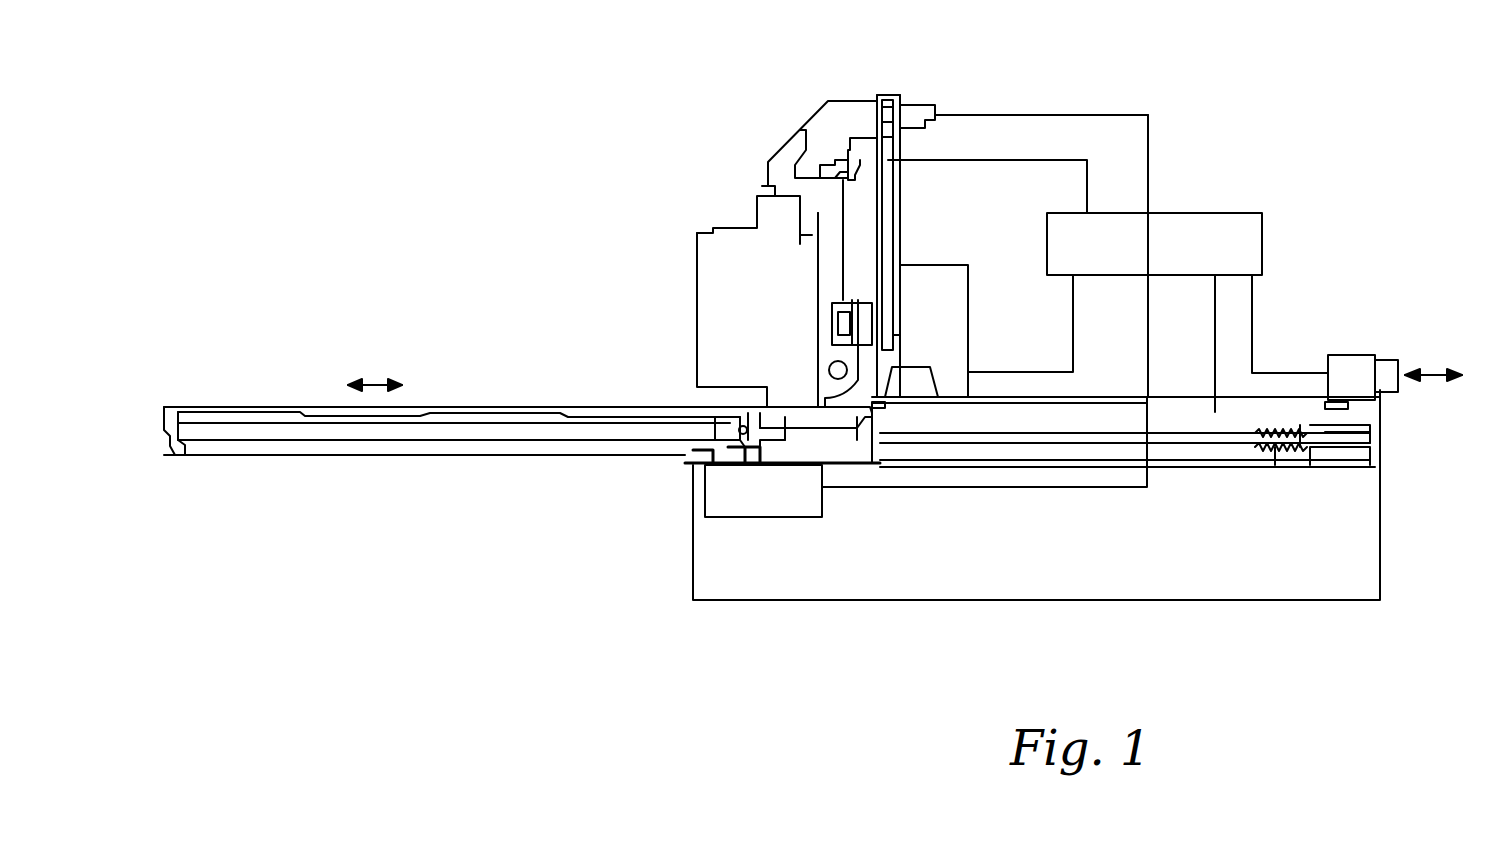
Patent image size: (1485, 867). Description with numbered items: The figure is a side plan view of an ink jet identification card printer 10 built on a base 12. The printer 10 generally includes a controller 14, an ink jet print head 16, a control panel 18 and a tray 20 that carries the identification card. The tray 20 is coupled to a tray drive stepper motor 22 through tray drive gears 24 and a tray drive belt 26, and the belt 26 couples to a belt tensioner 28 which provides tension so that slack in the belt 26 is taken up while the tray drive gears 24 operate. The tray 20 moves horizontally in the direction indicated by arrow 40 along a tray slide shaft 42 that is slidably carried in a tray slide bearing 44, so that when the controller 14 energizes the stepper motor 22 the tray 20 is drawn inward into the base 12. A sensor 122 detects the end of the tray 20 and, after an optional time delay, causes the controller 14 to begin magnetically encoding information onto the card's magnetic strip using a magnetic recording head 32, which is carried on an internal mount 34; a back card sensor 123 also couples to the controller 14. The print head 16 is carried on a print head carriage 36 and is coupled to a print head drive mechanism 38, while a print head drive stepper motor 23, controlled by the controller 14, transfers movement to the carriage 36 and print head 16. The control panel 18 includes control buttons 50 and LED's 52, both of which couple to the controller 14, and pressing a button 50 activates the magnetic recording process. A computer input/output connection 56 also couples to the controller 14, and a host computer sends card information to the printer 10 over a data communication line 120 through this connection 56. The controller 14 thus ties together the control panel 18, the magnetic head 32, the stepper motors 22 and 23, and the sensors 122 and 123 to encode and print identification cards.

The ink jet identification card printer 10 is at (1180, 50).
The base 12 is at (1380, 543).
The controller 14 is at (1235, 213).
The ink jet print head 16 is at (763, 317).
The control panel 18 is at (897, 100).
The tray 20 is at (192, 405).
The tray drive stepper motor 22 is at (792, 502).
The print head drive stepper motor 23 is at (968, 295).
The tray drive gears 24 is at (745, 452).
The tray drive belt 26 is at (1218, 447).
The belt tensioner 28 is at (1355, 460).
The magnetic recording head 32 is at (905, 370).
The internal mount 34 is at (950, 400).
The print head carriage 36 is at (800, 215).
The print head drive mechanism 38 is at (860, 300).
The arrow 40 is at (382, 368).
The tray slide shaft 42 is at (228, 432).
The tray slide bearing 44 is at (713, 440).
The control buttons 50 is at (915, 110).
The LED's 52 is at (880, 95).
The computer input/output connection 56 is at (1340, 355).
The data communication line 120 is at (1437, 372).
The sensor 122 is at (885, 410).
The back card sensor 123 is at (1350, 407).